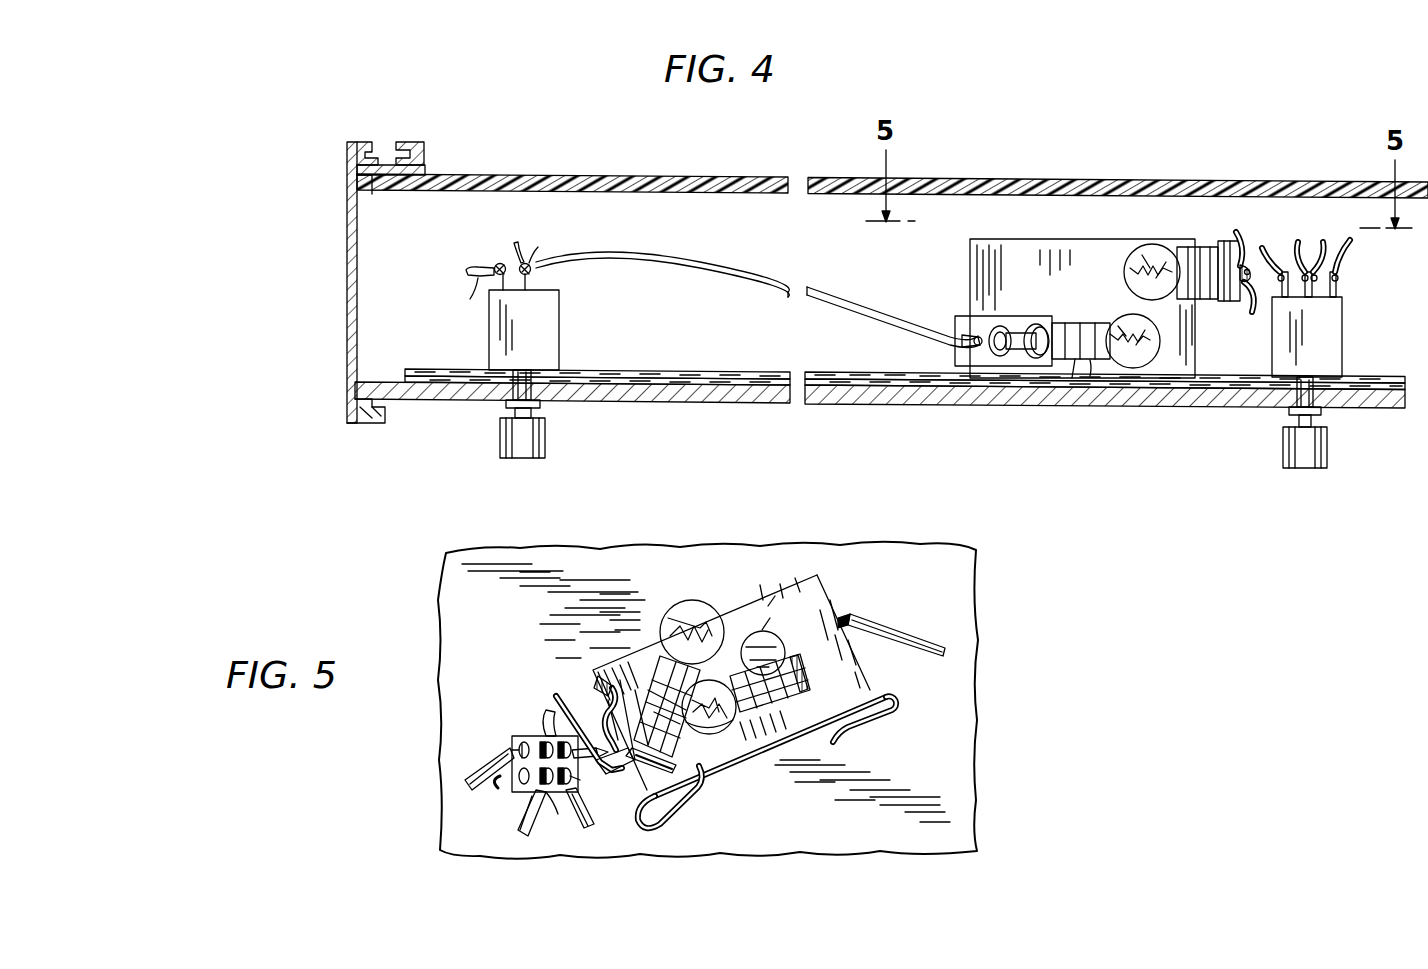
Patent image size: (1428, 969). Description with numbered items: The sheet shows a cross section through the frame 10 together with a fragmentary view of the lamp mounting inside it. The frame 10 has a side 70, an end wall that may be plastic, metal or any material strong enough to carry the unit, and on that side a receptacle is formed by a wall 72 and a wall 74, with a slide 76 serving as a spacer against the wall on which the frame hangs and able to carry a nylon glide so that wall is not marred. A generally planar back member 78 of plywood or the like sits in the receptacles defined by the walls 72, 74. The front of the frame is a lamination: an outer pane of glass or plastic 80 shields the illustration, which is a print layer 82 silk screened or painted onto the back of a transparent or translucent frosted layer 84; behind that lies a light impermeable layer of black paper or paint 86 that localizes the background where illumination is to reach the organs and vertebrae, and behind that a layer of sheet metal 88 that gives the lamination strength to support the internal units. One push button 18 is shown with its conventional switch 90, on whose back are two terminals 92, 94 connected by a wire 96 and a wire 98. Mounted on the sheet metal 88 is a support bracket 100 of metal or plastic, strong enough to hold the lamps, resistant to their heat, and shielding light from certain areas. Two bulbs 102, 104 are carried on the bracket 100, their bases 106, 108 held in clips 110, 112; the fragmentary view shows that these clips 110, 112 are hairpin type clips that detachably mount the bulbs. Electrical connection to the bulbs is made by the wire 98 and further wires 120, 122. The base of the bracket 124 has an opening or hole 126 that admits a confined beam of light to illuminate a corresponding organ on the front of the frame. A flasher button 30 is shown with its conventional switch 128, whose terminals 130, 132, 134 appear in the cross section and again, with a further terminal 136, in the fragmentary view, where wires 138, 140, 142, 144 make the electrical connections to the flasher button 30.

In FIG. 4, the frame 10 is at (338, 316).
In FIG. 4, the push button 18 is at (500, 457).
In FIG. 4, the flasher button 30 is at (1305, 460).
In FIG. 4, the side 70 is at (347, 245).
In FIG. 4, the wall 72 is at (374, 196).
In FIG. 4, the wall 74 is at (388, 152).
In FIG. 4, the slide 76 is at (374, 150).
In FIG. 4, the back member 78 is at (656, 184).
In FIG. 4, the outer pane of glass or plastic 80 is at (1256, 409).
In FIG. 4, the print layer 82 is at (858, 405).
In FIG. 4, the frosted layer 84 is at (758, 404).
In FIG. 4, the layer of black paper or paint 86 is at (715, 378).
In FIG. 4, the layer of sheet metal 88 is at (636, 372).
In FIG. 4, the switch 90 is at (500, 334).
In FIG. 4, the terminal 92 is at (503, 262).
In FIG. 4, the terminal 94 is at (530, 262).
In FIG. 4, the wire 96 is at (472, 293).
In FIG. 4, the wire 98 is at (673, 260).
In FIG. 5, the wire 98 is at (922, 640).
In FIG. 4, the support bracket 100 is at (1012, 240).
In FIG. 5, the support bracket 100 is at (798, 735).
In FIG. 4, the bulb 102 is at (1145, 248).
In FIG. 5, the bulb 102 is at (700, 604).
In FIG. 4, the bulb 104 is at (1118, 380).
In FIG. 5, the bulb 104 is at (740, 736).
In FIG. 4, the base 106 is at (1212, 250).
In FIG. 4, the base 108 is at (1072, 380).
In FIG. 4, the clip 110 is at (1215, 302).
In FIG. 5, the clip 110 is at (676, 810).
In FIG. 4, the clip 112 is at (992, 318).
In FIG. 5, the clip 112 is at (893, 712).
In FIG. 5, the wire 120 is at (564, 690).
In FIG. 5, the wire 122 is at (614, 672).
In FIG. 5, the base of the bracket 124 is at (830, 592).
In FIG. 4, the opening or hole 126 is at (1103, 374).
In FIG. 5, the opening or hole 126 is at (760, 631).
In FIG. 4, the switch 128 is at (1313, 308).
In FIG. 4, the terminal 130 is at (1278, 300).
In FIG. 5, the terminal 130 is at (576, 782).
In FIG. 4, the terminal 132 is at (1310, 292).
In FIG. 5, the terminal 132 is at (574, 758).
In FIG. 4, the terminal 134 is at (1338, 291).
In FIG. 5, the terminal 134 is at (518, 742).
In FIG. 5, the further terminal 136 is at (536, 808).
In FIG. 5, the wire 138 is at (540, 732).
In FIG. 5, the wire 140 is at (504, 760).
In FIG. 5, the wire 142 is at (522, 806).
In FIG. 5, the wire 144 is at (590, 812).